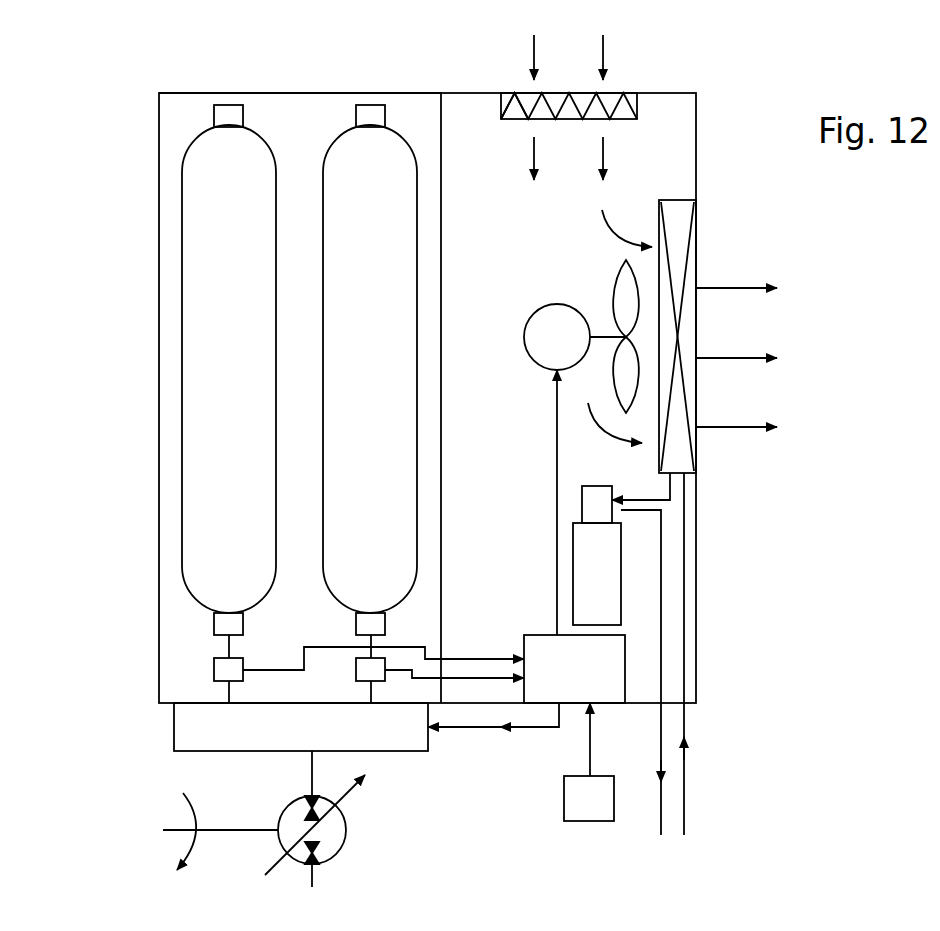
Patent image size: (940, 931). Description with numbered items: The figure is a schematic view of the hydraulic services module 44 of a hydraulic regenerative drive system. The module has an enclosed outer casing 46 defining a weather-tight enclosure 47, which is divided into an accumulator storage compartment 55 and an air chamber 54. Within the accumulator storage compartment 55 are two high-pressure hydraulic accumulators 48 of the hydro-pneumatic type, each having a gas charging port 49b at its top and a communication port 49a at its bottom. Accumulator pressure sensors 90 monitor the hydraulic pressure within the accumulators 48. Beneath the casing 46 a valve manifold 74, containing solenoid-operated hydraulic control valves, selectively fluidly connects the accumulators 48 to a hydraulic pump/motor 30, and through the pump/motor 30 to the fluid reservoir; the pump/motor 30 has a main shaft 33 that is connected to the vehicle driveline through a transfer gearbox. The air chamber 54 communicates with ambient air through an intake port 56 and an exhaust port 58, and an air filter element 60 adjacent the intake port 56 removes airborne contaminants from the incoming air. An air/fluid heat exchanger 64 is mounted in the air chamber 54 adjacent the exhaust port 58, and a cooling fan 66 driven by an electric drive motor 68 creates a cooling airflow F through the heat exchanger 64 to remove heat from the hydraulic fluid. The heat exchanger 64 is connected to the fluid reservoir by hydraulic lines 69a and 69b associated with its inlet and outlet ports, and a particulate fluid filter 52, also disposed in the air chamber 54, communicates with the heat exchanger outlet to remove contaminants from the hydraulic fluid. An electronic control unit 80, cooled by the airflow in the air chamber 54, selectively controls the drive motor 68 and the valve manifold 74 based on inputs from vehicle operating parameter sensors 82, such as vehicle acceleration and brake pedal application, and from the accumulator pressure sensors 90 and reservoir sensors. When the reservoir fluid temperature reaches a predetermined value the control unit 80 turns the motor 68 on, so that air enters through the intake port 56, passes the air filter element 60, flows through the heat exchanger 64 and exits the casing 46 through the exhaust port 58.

The hydraulic pump/motor 30 is at (277, 835).
The main shaft 33 is at (243, 830).
The hydraulic services module 44 is at (143, 203).
The outer casing 46 is at (323, 93).
The enclosure 47 is at (290, 110).
The high-pressure hydraulic accumulators 48 is at (238, 367).
The communication port 49a is at (356, 617).
The gas charging port 49b is at (213, 116).
The particulate fluid filter 52 is at (600, 559).
The air chamber 54 is at (509, 247).
The accumulator storage compartment 55 is at (309, 302).
The intake port 56 is at (553, 93).
The exhaust port 58 is at (696, 328).
The air filter element 60 is at (507, 105).
The heat exchanger 64 is at (685, 220).
The cooling fan 66 is at (628, 381).
The drive motor 68 is at (555, 304).
The hydraulic line 69a is at (684, 762).
The hydraulic line 69b is at (662, 805).
The valve manifold 74 is at (183, 725).
The electronic control unit 80 is at (606, 682).
The vehicle operating parameter sensors 82 is at (564, 800).
The accumulator pressure sensors 90 is at (214, 670).
The cooling airflow F is at (748, 427).